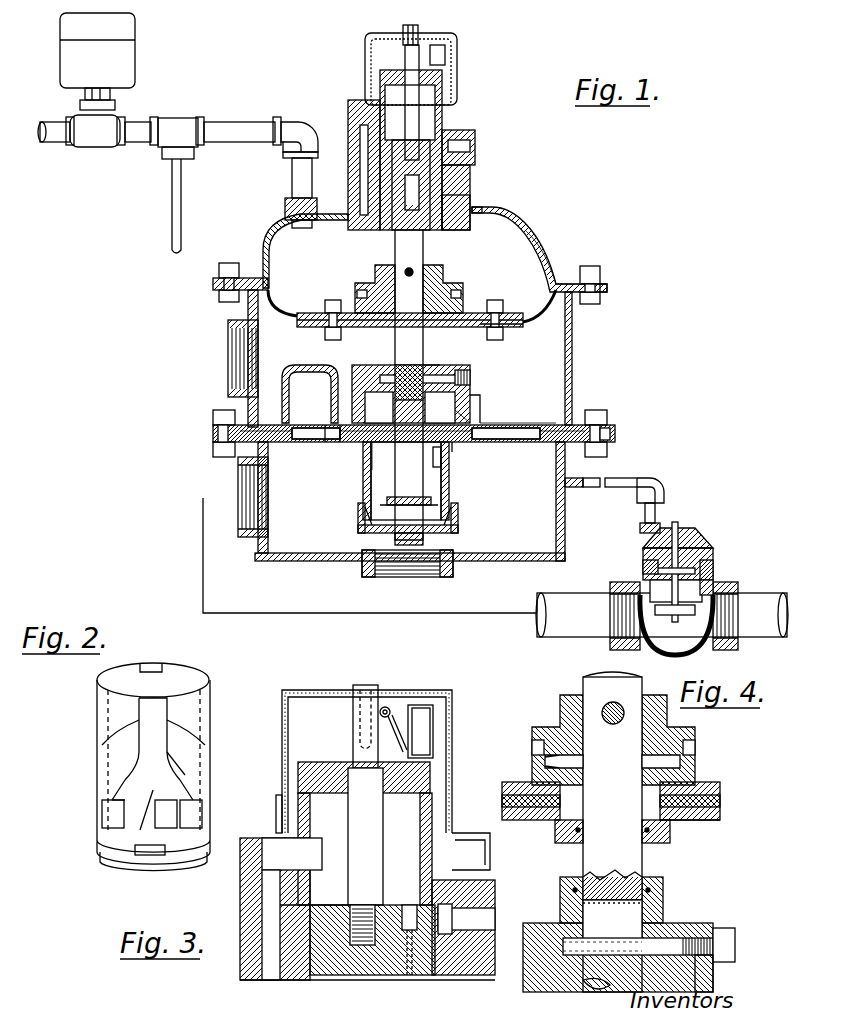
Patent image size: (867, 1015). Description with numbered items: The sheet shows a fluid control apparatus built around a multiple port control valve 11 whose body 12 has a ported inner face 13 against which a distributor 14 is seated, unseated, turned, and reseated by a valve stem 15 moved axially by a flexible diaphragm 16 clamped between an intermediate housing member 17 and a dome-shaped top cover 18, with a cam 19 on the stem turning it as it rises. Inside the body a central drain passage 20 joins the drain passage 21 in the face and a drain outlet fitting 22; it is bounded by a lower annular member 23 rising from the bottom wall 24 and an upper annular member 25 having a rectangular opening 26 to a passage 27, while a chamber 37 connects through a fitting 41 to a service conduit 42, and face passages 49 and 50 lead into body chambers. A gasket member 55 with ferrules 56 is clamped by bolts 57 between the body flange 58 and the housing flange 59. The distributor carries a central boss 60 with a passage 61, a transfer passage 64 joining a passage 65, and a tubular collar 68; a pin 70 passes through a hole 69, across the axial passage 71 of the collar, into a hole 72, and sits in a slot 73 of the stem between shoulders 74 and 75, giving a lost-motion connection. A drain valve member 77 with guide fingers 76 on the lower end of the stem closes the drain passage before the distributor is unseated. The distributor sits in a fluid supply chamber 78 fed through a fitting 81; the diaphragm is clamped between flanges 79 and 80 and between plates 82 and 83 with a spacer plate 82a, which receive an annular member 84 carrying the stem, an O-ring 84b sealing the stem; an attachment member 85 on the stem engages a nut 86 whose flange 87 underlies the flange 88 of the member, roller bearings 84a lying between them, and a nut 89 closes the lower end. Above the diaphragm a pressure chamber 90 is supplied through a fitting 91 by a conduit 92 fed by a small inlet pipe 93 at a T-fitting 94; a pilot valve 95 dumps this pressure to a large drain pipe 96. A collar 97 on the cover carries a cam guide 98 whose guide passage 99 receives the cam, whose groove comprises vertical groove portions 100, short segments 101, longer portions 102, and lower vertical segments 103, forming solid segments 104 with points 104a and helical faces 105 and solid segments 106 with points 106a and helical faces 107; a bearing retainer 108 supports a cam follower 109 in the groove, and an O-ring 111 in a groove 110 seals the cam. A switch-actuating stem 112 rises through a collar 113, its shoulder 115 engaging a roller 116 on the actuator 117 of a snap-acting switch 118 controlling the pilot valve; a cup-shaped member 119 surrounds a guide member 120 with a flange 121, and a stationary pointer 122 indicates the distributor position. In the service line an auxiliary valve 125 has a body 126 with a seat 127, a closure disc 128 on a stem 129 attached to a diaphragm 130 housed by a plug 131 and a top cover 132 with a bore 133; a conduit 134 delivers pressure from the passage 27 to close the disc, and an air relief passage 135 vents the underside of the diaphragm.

In FIG. 1, the control valve 11 is at (580, 225).
In FIG. 1, the body 12 is at (568, 511).
In FIG. 1, the inner face 13 is at (560, 425).
In FIG. 1, the distributor 14 is at (458, 418).
In FIG. 1, the valve stem 15 is at (420, 260).
In FIG. 4, the valve stem 15 is at (600, 690).
In FIG. 1, the flexible diaphragm 16 is at (528, 320).
In FIG. 1, the intermediate housing member 17 is at (573, 343).
In FIG. 1, the top cover 18 is at (515, 250).
In FIG. 1, the cam 19 is at (443, 175).
In FIG. 2, the cam 19 is at (77, 798).
In FIG. 3, the cam 19 is at (352, 965).
In FIG. 1, the drain passage 20 is at (371, 490).
In FIG. 1, the drain passage 21 is at (379, 456).
In FIG. 1, the drain outlet fitting 22 is at (370, 577).
In FIG. 1, the lower annular member 23 is at (458, 518).
In FIG. 1, the bottom wall 24 is at (318, 561).
In FIG. 1, the upper annular member 25 is at (363, 483).
In FIG. 1, the rectangular opening 26 is at (441, 460).
In FIG. 1, the passage 27 is at (521, 590).
In FIG. 1, the chamber 37 is at (280, 560).
In FIG. 1, the fitting 41 is at (243, 540).
In FIG. 1, the service conduit 42 is at (570, 600).
In FIG. 1, the passage 49 is at (466, 445).
In FIG. 1, the passage 50 is at (335, 442).
In FIG. 1, the gasket member 55 is at (592, 432).
In FIG. 1, the annular flanged ferrules 56 is at (300, 428).
In FIG. 1, the bolts 57 is at (213, 440).
In FIG. 1, the peripheral flange 58 is at (602, 445).
In FIG. 1, the peripheral flange 59 is at (215, 420).
In FIG. 1, the boss 60 is at (360, 378).
In FIG. 4, the boss 60 is at (663, 890).
In FIG. 1, the passage 61 is at (470, 396).
In FIG. 1, the transfer passage 64 is at (292, 368).
In FIG. 1, the passage 65 is at (326, 425).
In FIG. 1, the tubular collar 68 is at (428, 358).
In FIG. 4, the transverse hole 69 is at (668, 960).
In FIG. 1, the pin 70 is at (470, 378).
In FIG. 4, the pin 70 is at (680, 938).
In FIG. 4, the axial passage 71 is at (560, 893).
In FIG. 1, the hole 72 is at (421, 379).
In FIG. 4, the hole 72 is at (590, 950).
In FIG. 1, the slot 73 is at (379, 407).
In FIG. 4, the slot 73 is at (625, 920).
In FIG. 1, the shoulder 74 is at (395, 372).
In FIG. 4, the shoulder 74 is at (625, 890).
In FIG. 1, the shoulder 75 is at (440, 407).
In FIG. 4, the shoulder 75 is at (583, 985).
In FIG. 1, the guide fingers 76 is at (365, 512).
In FIG. 1, the drain valve member 77 is at (458, 538).
In FIG. 1, the fluid supply chamber 78 is at (545, 382).
In FIG. 1, the peripheral flange 79 is at (600, 296).
In FIG. 1, the peripheral flange 80 is at (575, 278).
In FIG. 1, the fitting 81 is at (228, 322).
In FIG. 1, the clamping plate 82 is at (502, 305).
In FIG. 4, the clamping plate 82 is at (722, 790).
In FIG. 1, the spacer plate 82a is at (455, 315).
In FIG. 4, the spacer plate 82a is at (722, 804).
In FIG. 1, the clamping plate 83 is at (510, 327).
In FIG. 4, the clamping plate 83 is at (722, 818).
In FIG. 4, the annular member 84 is at (560, 828).
In FIG. 4, the roller bearings 84a is at (540, 747).
In FIG. 4, the O-ring 84b is at (577, 842).
In FIG. 1, the attachment member 85 is at (440, 282).
In FIG. 4, the attachment member 85 is at (565, 712).
In FIG. 1, the nut 86 is at (362, 292).
In FIG. 4, the nut 86 is at (690, 755).
In FIG. 4, the transverse flange 87 is at (690, 770).
In FIG. 4, the annular flange 88 is at (545, 760).
In FIG. 4, the nut 89 is at (672, 832).
In FIG. 1, the pressure chamber 90 is at (565, 232).
In FIG. 1, the fitting 91 is at (285, 213).
In FIG. 1, the fluid supply conduit 92 is at (237, 135).
In FIG. 1, the inlet pipe 93 is at (182, 210).
In FIG. 1, the T-fitting 94 is at (182, 118).
In FIG. 1, the pilot valve 95 is at (100, 140).
In FIG. 1, the drain pipe 96 is at (55, 125).
In FIG. 1, the annular collar 97 is at (455, 205).
In FIG. 1, the cam guide 98 is at (310, 160).
In FIG. 3, the cam guide 98 is at (245, 958).
In FIG. 1, the guide passage 99 is at (432, 190).
In FIG. 3, the guide passage 99 is at (280, 912).
In FIG. 2, the vertical groove portions 100 is at (157, 705).
In FIG. 2, the short groove segments 101 is at (130, 775).
In FIG. 2, the longer groove portions 102 is at (160, 800).
In FIG. 2, the vertical groove segments 103 is at (115, 815).
In FIG. 2, the solid guide segments 104 is at (202, 785).
In FIG. 2, the point 104a is at (130, 788).
In FIG. 2, the helical faces 105 is at (166, 812).
In FIG. 2, the solid segments 106 is at (192, 715).
In FIG. 2, the lower points 106a is at (183, 790).
In FIG. 2, the helical faces 107 is at (125, 760).
In FIG. 3, the bearing retainer 108 is at (490, 885).
In FIG. 3, the cam follower 109 is at (412, 960).
In FIG. 2, the peripheral groove 110 is at (178, 858).
In FIG. 1, the O-ring 111 is at (480, 215).
In FIG. 3, the switch-actuating stem 112 is at (383, 838).
In FIG. 3, the annular collar 113 is at (432, 770).
In FIG. 3, the shoulder 115 is at (356, 735).
In FIG. 3, the roller 116 is at (388, 708).
In FIG. 3, the actuator 117 is at (402, 745).
In FIG. 3, the snap-acting switch 118 is at (425, 705).
In FIG. 3, the cup-shaped member 119 is at (290, 700).
In FIG. 3, the guide member 120 is at (432, 722).
In FIG. 3, the transverse flange 121 is at (466, 855).
In FIG. 3, the stationary pointer 122 is at (278, 805).
In FIG. 1, the auxiliary valve 125 is at (724, 545).
In FIG. 1, the valve body 126 is at (690, 648).
In FIG. 1, the valve seat 127 is at (700, 612).
In FIG. 1, the valve closure disc 128 is at (652, 648).
In FIG. 1, the stem 129 is at (643, 563).
In FIG. 1, the flexible diaphragm 130 is at (698, 545).
In FIG. 1, the plug 131 is at (712, 590).
In FIG. 1, the top cover 132 is at (682, 568).
In FIG. 1, the central bore 133 is at (676, 540).
In FIG. 1, the conduit 134 is at (608, 487).
In FIG. 1, the air relief passage 135 is at (712, 575).